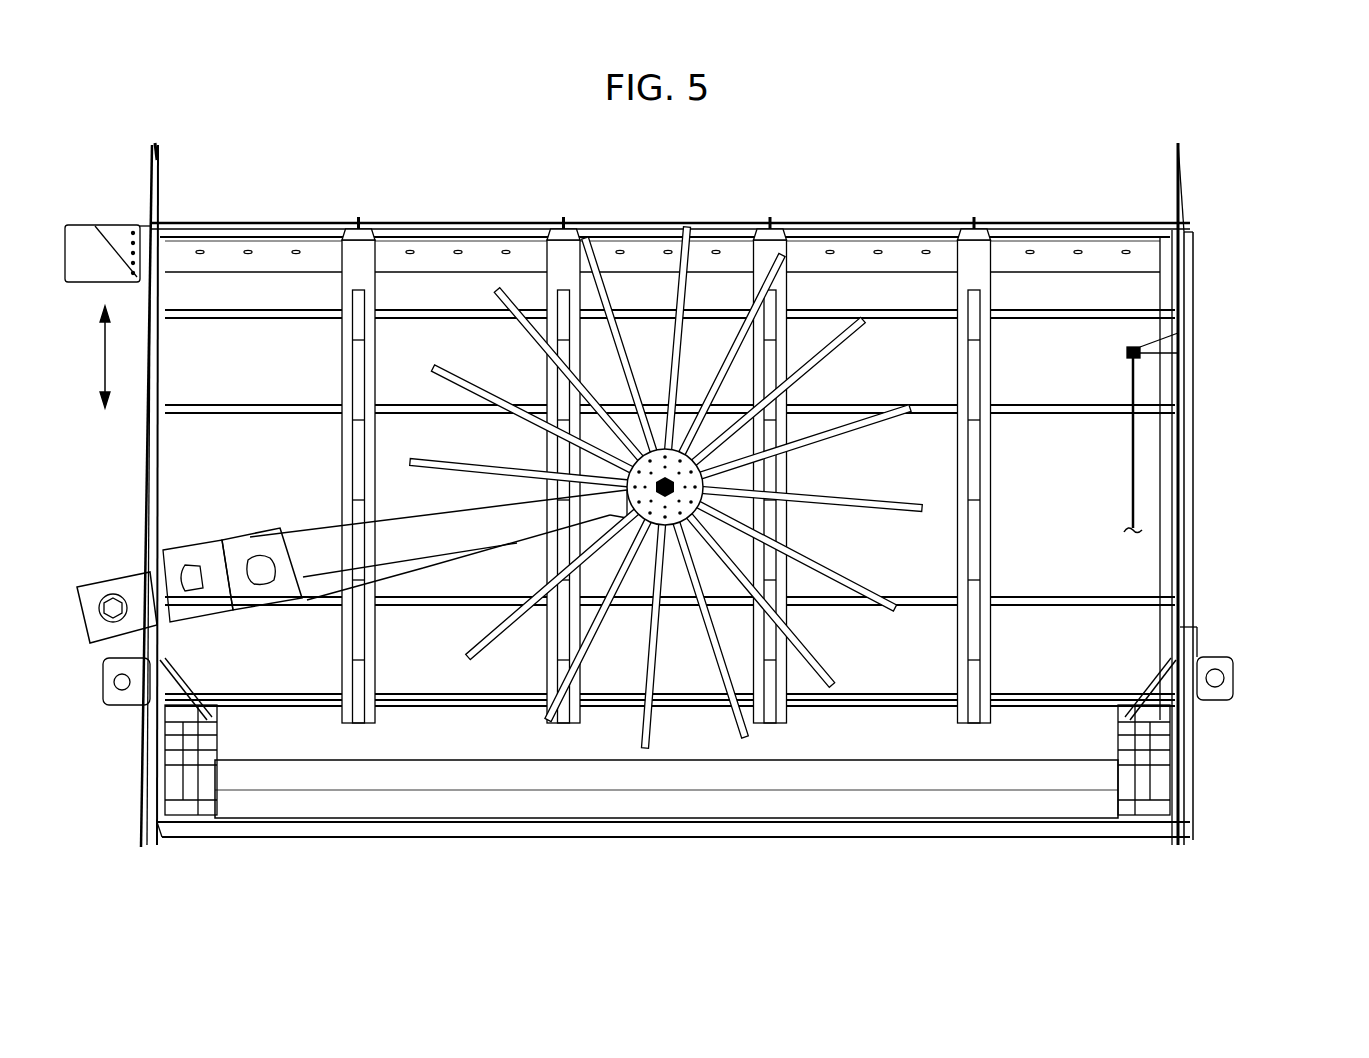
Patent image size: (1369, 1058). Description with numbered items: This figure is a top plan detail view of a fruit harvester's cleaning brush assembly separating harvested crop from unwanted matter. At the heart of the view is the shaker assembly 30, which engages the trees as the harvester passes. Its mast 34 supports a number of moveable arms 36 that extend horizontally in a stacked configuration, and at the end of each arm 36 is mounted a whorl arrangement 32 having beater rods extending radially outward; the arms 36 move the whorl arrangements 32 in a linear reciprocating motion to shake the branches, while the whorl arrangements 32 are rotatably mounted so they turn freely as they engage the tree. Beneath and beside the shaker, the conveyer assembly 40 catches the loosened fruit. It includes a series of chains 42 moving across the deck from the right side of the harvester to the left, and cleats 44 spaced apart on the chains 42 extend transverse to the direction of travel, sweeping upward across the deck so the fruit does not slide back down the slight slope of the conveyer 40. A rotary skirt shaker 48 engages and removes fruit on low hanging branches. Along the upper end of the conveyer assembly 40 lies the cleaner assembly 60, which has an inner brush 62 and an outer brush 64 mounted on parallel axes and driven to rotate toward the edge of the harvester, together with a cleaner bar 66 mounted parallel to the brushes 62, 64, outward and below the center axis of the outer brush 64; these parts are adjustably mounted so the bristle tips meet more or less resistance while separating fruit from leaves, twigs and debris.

The shaker assembly 30 is at (897, 174).
The whorl arrangement 32 is at (662, 440).
The mast 34 is at (100, 593).
The moveable arm 36 is at (347, 535).
The conveyer assembly 40 is at (1246, 260).
The chain 42 is at (201, 376).
The cleat 44 is at (313, 318).
The rotary skirt shaker 48 is at (1135, 465).
The cleaner assembly 60 is at (1244, 813).
The inner brush 62 is at (580, 745).
The outer brush 64 is at (447, 800).
The cleaner bar 66 is at (300, 824).